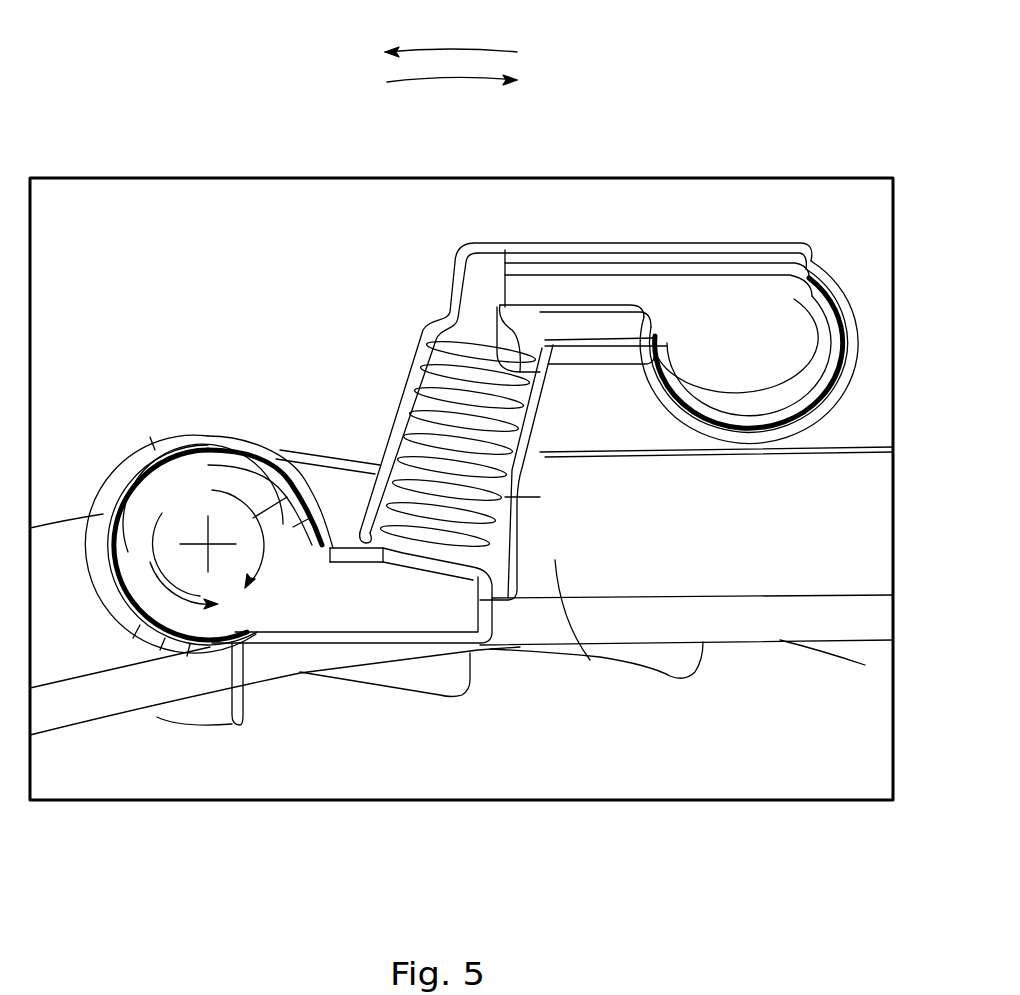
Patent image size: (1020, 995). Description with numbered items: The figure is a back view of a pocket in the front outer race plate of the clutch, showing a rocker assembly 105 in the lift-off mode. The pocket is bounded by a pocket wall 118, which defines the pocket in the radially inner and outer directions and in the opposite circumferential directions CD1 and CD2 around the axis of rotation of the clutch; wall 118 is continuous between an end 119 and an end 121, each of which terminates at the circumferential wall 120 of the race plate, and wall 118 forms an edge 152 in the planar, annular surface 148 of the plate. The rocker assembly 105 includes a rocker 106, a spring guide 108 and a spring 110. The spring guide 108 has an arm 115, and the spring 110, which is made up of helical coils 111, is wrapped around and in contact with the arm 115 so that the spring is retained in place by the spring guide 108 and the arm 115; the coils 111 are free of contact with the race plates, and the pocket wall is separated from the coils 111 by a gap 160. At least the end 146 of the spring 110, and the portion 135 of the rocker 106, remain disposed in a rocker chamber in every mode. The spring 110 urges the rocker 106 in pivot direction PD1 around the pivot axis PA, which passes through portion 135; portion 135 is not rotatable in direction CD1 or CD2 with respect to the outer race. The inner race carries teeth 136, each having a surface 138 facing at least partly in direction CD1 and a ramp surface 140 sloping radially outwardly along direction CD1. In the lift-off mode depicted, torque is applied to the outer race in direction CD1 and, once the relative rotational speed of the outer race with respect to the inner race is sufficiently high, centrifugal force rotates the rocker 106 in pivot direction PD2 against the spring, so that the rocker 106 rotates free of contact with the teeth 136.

The rocker assembly 105 is at (399, 298).
The rocker 106 is at (303, 650).
The spring guide 108 is at (808, 380).
The spring 110 is at (410, 386).
The helical coils 111 is at (541, 503).
The arm 115 is at (412, 455).
The pocket wall 118 is at (766, 278).
The end 119 is at (231, 700).
The circumferential wall 120 is at (182, 698).
The end 121 is at (551, 555).
The portion 135 is at (197, 477).
The teeth 136 is at (806, 641).
The surface 138 is at (700, 660).
The ramp surface 140 is at (833, 647).
The end 146 is at (471, 345).
The planar annular surface 148 is at (590, 660).
The edge 152 is at (152, 437).
The gap 160 is at (527, 453).
The pivot axis PA is at (203, 542).
The pivot direction PD1 is at (297, 478).
The pivot direction PD2 is at (153, 567).
The circumferential direction CD1 is at (461, 47).
The circumferential direction CD2 is at (490, 82).